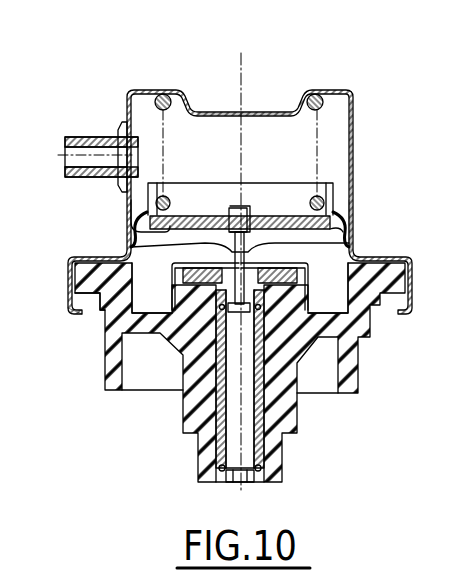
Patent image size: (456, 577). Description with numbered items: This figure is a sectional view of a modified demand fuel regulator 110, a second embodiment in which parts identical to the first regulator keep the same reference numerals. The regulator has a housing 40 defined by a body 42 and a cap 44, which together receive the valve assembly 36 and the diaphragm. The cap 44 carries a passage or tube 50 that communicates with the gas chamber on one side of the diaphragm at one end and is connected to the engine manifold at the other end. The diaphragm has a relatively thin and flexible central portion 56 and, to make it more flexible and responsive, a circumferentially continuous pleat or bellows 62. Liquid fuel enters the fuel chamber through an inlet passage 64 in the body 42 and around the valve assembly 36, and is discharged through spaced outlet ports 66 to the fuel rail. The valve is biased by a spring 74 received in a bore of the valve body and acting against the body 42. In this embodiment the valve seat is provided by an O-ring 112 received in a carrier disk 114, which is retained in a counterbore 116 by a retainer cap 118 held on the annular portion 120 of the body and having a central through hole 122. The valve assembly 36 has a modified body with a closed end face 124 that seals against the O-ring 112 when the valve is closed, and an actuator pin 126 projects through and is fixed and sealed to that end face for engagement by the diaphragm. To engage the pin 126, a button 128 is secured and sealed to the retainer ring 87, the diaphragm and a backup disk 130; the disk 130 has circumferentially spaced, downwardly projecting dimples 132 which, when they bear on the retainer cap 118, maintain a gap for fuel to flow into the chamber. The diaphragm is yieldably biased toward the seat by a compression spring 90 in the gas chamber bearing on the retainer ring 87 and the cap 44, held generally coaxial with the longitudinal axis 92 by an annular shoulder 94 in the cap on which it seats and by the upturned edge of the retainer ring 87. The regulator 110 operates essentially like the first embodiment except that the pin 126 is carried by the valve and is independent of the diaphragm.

The valve assembly 36 is at (350, 215).
The housing 40 is at (68, 323).
The body 42 is at (112, 380).
The cap 44 is at (127, 117).
The passage or tube 50 is at (90, 172).
The central portion 56 is at (290, 205).
The pleat or bellows 62 is at (345, 205).
The inlet passage 64 is at (243, 484).
The outlet ports 66 is at (168, 334).
The spring 74 is at (265, 452).
The retainer ring 87 is at (183, 187).
The compression spring 90 is at (167, 93).
The longitudinal axis 92 is at (241, 72).
The annular shoulder 94 is at (265, 118).
The fuel regulator 110 is at (340, 76).
The O-ring 112 is at (131, 247).
The carrier disk 114 is at (345, 245).
The counterbore 116 is at (300, 295).
The cap 118 is at (177, 293).
The annular portion 120 is at (120, 342).
The central through hole 122 is at (250, 252).
The end face 124 is at (213, 208).
The actuator pin 126 is at (238, 307).
The button 128 is at (247, 207).
The backup disk 130 is at (132, 232).
The dimples 132 is at (340, 230).